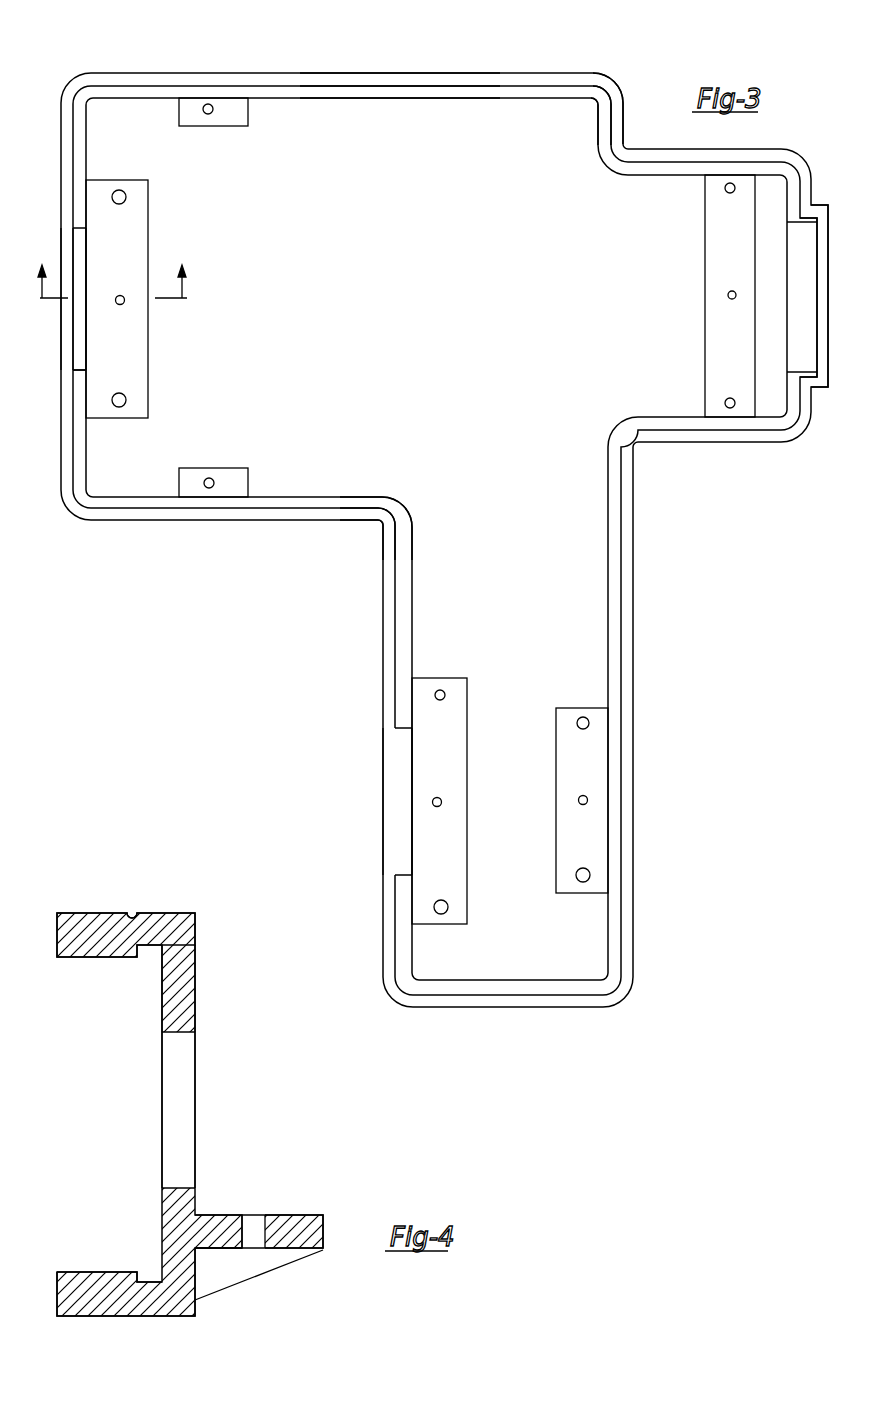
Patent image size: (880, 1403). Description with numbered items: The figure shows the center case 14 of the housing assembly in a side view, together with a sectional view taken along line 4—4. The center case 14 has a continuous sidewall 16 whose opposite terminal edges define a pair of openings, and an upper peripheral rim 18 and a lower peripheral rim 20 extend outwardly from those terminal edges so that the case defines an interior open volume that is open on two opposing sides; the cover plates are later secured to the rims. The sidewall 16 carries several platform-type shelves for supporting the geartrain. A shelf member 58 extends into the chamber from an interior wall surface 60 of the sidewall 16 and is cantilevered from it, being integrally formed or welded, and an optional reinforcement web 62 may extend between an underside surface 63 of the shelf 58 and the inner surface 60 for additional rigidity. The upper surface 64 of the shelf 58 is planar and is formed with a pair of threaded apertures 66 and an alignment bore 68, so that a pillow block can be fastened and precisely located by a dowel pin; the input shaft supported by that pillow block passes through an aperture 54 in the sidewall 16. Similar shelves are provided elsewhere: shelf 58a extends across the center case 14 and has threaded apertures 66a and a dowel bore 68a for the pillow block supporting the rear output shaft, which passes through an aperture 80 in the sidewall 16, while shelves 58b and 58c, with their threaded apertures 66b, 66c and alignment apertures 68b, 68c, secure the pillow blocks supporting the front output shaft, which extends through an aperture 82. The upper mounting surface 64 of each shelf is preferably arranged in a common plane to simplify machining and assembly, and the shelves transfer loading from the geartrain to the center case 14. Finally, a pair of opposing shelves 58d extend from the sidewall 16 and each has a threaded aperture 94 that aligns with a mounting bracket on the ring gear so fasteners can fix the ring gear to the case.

In FIG. 3, the center case 14 is at (525, 88).
In FIG. 4, the center case 14 is at (195, 929).
In FIG. 3, the sidewall 16 is at (412, 90).
In FIG. 4, the sidewall 16 is at (182, 972).
In FIG. 4, the upper peripheral rim 18 is at (78, 930).
In FIG. 3, the lower peripheral rim 20 is at (615, 95).
In FIG. 4, the lower peripheral rim 20 is at (93, 1272).
In FIG. 3, the aperture 54 is at (80, 368).
In FIG. 4, the aperture 54 is at (182, 1035).
In FIG. 3, the shelf member 58 is at (138, 208).
In FIG. 4, the shelf member 58 is at (303, 1230).
In FIG. 3, the shelf 58a is at (713, 208).
In FIG. 3, the shelf 58b is at (600, 822).
In FIG. 3, the shelf 58c is at (462, 836).
In FIG. 3, the shelf 58d is at (245, 115).
In FIG. 3, the interior wall surface 60 is at (380, 498).
In FIG. 4, the interior wall surface 60 is at (195, 1005).
In FIG. 4, the reinforcement web 62 is at (255, 1272).
In FIG. 4, the underside surface 63 is at (212, 1250).
In FIG. 4, the upper surface 64 is at (208, 1217).
In FIG. 3, the threaded apertures 66 is at (119, 190).
In FIG. 3, the threaded apertures 66a is at (735, 186).
In FIG. 3, the threaded apertures 66b is at (589, 722).
In FIG. 3, the threaded apertures 66c is at (446, 694).
In FIG. 3, the alignment bore 68 is at (122, 305).
In FIG. 4, the alignment bore 68 is at (262, 1230).
In FIG. 3, the dowel bore 68a is at (731, 297).
In FIG. 3, the alignment aperture 68b is at (588, 798).
In FIG. 3, the alignment aperture 68c is at (441, 800).
In FIG. 3, the aperture 80 is at (790, 224).
In FIG. 3, the aperture 82 is at (403, 873).
In FIG. 3, the threaded aperture 94 is at (208, 114).
In FIG. 3, the section line 4— 4 is at (113, 268).